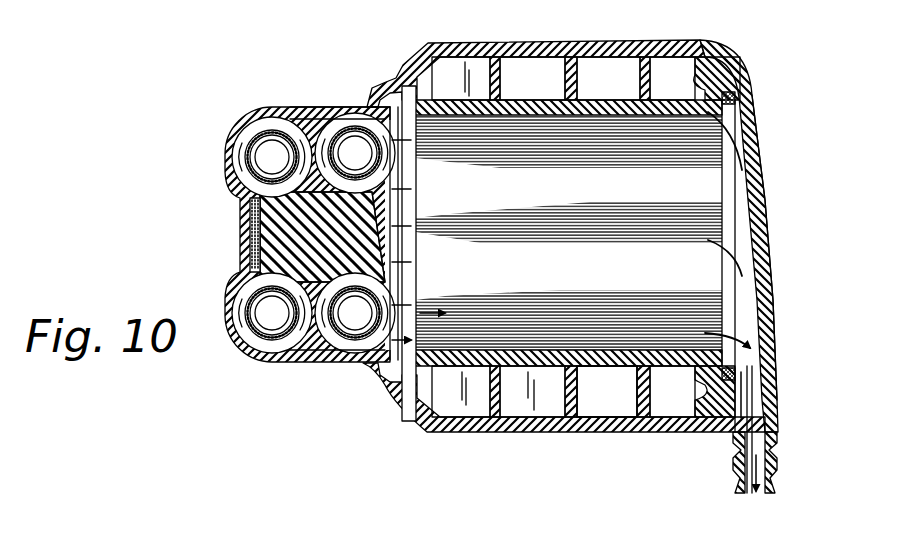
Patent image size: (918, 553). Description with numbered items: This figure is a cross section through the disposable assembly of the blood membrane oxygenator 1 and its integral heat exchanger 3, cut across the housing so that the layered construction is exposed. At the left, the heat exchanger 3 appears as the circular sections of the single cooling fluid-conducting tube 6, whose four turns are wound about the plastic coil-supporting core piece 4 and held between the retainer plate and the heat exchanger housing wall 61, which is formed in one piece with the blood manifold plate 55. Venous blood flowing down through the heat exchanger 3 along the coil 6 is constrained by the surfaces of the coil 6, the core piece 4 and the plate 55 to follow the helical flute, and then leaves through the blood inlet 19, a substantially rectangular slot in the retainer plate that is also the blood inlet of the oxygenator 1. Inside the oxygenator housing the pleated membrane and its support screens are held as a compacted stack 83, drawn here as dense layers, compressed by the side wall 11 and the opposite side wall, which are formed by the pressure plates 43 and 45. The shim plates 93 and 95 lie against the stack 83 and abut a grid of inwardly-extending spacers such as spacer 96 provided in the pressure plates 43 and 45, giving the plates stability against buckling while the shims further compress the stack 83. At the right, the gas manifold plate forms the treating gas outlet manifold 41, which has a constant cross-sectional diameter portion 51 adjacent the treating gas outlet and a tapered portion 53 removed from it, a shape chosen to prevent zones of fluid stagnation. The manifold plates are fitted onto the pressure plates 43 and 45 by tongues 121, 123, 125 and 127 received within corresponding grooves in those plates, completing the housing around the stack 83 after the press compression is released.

The blood membrane oxygenator 1 is at (765, 116).
The integral heat exchanger 3 is at (236, 257).
The coil-supporting core piece 4 is at (258, 232).
The cooling fluid-conducting tube 6 is at (258, 142).
The side wall 11 is at (543, 432).
The blood inlet 19 is at (416, 266).
The treating gas outlet manifold 41 is at (772, 306).
The pressure plate 43 is at (338, 0).
The pressure plate 45 is at (648, 42).
The constant cross-sectional diameter portion 51 is at (758, 343).
The tapered portion 53 is at (742, 222).
The blood manifold plate 55 is at (297, 107).
The heat exchanger housing wall 61 is at (254, 206).
The compacted stack 83 is at (720, 142).
The shim plate 93 is at (594, 364).
The shim plate 95 is at (611, 88).
The spacer 96 is at (498, 78).
The tongue 121 is at (436, 44).
The tongue 123 is at (706, 42).
The tongue 125 is at (408, 448).
The tongue 127 is at (704, 412).